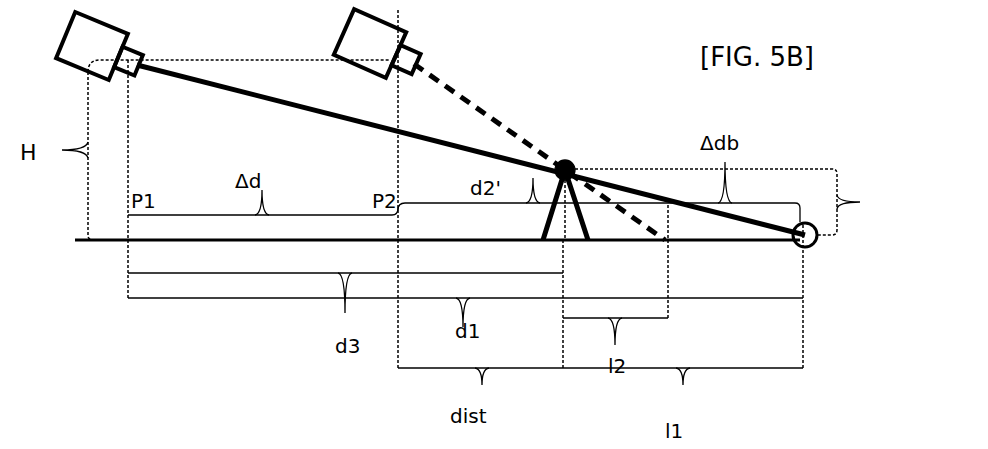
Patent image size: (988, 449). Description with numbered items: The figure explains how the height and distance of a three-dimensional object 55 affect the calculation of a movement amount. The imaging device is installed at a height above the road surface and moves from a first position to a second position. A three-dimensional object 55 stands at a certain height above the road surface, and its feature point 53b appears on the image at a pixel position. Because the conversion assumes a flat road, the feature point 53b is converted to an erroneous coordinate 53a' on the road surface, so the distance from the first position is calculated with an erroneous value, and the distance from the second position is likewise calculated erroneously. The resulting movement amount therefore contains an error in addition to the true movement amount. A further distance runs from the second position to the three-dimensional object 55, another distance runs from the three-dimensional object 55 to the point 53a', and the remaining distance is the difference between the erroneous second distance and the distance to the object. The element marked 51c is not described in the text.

The feature point of the three-dimensional object 53b is at (565, 158).
The three-dimensional object 55 is at (572, 197).
The height reference 51c is at (874, 212).
The erroneous coordinate 53a' is at (833, 283).